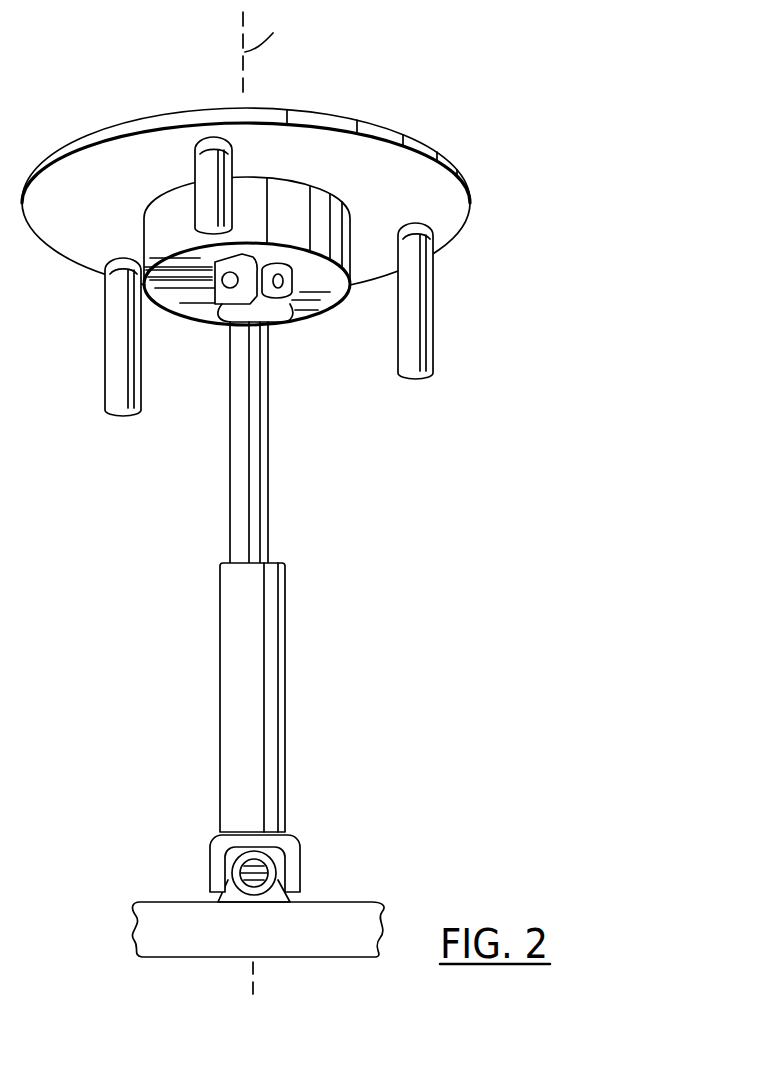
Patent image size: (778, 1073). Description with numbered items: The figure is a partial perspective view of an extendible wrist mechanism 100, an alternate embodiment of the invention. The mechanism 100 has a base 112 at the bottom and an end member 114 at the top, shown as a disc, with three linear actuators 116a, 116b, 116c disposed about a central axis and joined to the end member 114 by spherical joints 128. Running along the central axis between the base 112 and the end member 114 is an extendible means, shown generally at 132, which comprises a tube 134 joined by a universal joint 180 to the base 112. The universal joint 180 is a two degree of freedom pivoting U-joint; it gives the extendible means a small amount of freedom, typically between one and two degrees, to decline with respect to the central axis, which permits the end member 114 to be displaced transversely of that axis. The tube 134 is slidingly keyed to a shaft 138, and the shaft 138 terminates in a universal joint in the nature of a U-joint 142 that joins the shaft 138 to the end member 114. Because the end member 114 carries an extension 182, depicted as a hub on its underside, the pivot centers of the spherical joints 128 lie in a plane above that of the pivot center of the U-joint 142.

The mechanism 100 is at (339, 506).
The base 112 is at (140, 927).
The end member 114 is at (338, 123).
The linear actuator 116a is at (116, 358).
The linear actuator 116b is at (205, 201).
The linear actuator 116c is at (424, 330).
The spherical joints 128 is at (188, 147).
The telescoping strut 132 is at (324, 578).
The tube 134 is at (265, 712).
The shaft 138 is at (250, 492).
The U-joint 142 is at (315, 293).
The universal joint 180 is at (320, 869).
The extension 182 is at (320, 222).